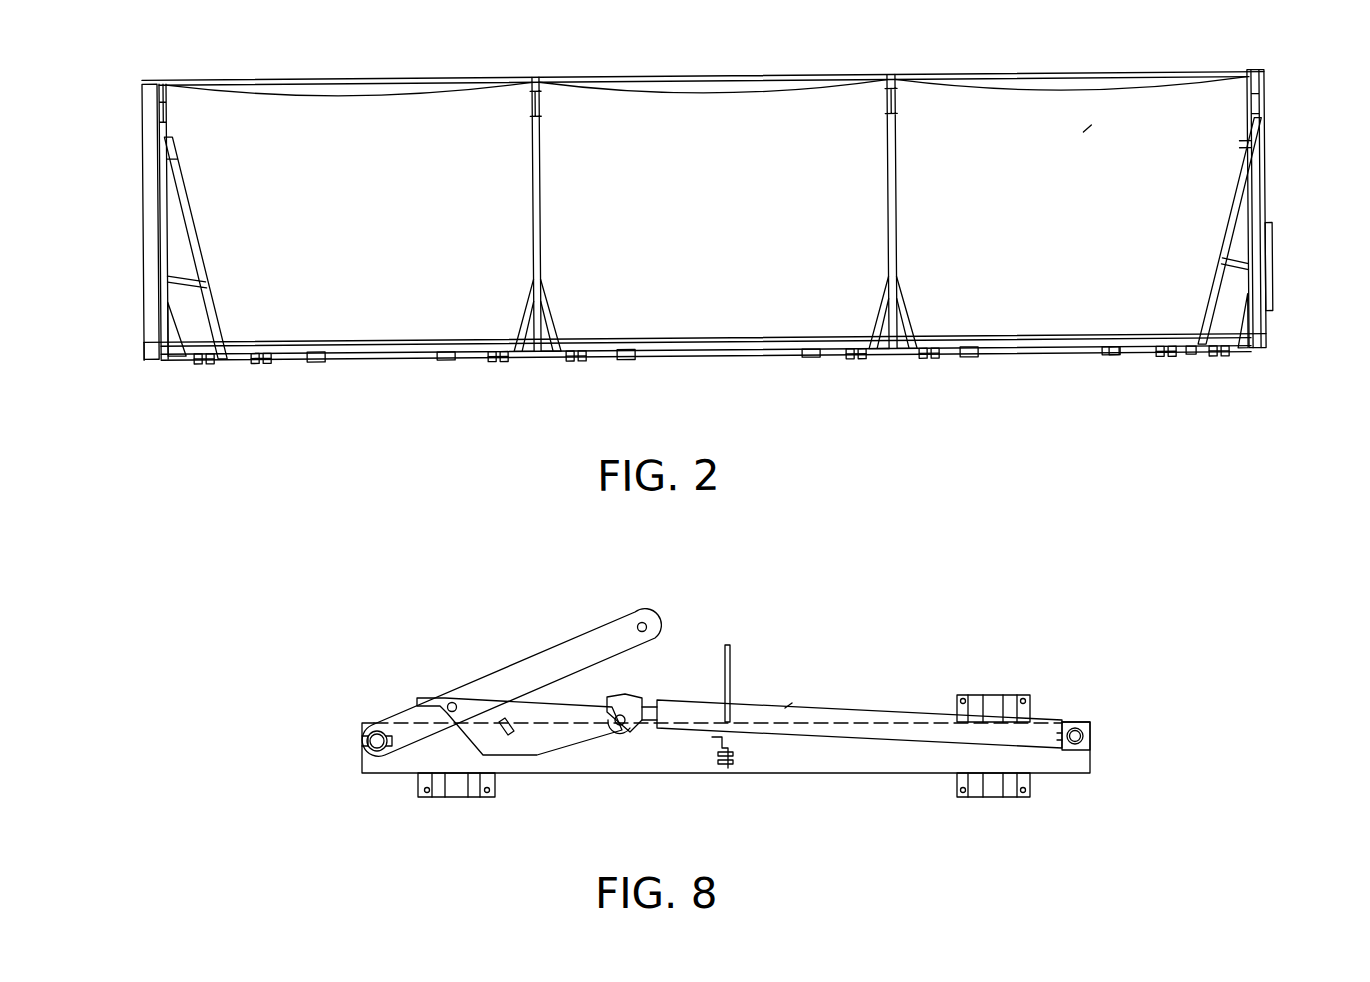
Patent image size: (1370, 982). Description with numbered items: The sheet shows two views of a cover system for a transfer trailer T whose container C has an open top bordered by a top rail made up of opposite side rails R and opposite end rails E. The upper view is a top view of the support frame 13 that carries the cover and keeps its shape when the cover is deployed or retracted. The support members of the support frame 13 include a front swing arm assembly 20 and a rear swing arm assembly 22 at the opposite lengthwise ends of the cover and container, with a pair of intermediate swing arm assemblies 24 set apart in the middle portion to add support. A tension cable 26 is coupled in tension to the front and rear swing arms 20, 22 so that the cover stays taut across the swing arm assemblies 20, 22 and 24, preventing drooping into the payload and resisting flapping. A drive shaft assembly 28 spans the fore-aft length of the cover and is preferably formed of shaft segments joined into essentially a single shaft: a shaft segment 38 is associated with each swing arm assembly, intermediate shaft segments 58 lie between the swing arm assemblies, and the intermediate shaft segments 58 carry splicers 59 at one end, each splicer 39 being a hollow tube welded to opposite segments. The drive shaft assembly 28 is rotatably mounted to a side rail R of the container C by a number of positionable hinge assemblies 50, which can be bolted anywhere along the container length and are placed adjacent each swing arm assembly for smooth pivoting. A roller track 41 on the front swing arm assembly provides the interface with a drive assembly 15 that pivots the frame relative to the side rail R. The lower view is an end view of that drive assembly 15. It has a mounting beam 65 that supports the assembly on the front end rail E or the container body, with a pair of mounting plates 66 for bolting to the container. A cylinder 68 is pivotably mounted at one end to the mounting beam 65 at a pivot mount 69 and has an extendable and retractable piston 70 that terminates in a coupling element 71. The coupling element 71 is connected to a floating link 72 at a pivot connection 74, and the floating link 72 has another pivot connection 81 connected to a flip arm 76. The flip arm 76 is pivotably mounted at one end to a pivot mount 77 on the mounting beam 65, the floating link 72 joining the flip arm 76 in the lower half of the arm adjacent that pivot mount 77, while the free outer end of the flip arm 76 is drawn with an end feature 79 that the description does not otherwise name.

In FIG. 2, the support frame 13 is at (730, 339).
In FIG. 2, the front swing arm assembly 20 is at (1226, 240).
In FIG. 2, the rear swing arm assembly 22 is at (200, 242).
In FIG. 2, the intermediate swing arm assemblies 24 is at (540, 192).
In FIG. 2, the tension cable 26 is at (348, 93).
In FIG. 2, the drive shaft assembly 28 is at (348, 351).
In FIG. 2, the shaft segment 38 is at (1190, 359).
In FIG. 2, the splicer 39 is at (1113, 359).
In FIG. 2, the roller track 41 is at (1273, 270).
In FIG. 2, the positionable hinge assemblies 50 is at (207, 361).
In FIG. 2, the intermediate shaft segments 58 is at (368, 358).
In FIG. 2, the splicers 59 is at (318, 348).
In FIG. 2, the end rails E is at (150, 85).
In FIG. 2, the side rails R is at (1012, 82).
In FIG. 2, the container C is at (1088, 132).
In FIG. 2, the transfer trailer T is at (1178, 76).
In FIG. 8, the drive assembly 15 is at (788, 704).
In FIG. 8, the mounting beam 65 is at (767, 760).
In FIG. 8, the mounting plates 66 is at (457, 797).
In FIG. 8, the cylinder 68 is at (887, 730).
In FIG. 8, the pivot mount 69 is at (1078, 727).
In FIG. 8, the piston 70 is at (657, 705).
In FIG. 8, the coupling element 71 is at (635, 695).
In FIG. 8, the floating link 72 is at (547, 745).
In FIG. 8, the pivot connection 74 is at (628, 730).
In FIG. 8, the flip arm 76 is at (538, 668).
In FIG. 8, the pivot mount 77 is at (362, 745).
In FIG. 8, the arm end pivot hole 79 is at (636, 611).
In FIG. 8, the pivot connection 81 is at (457, 695).